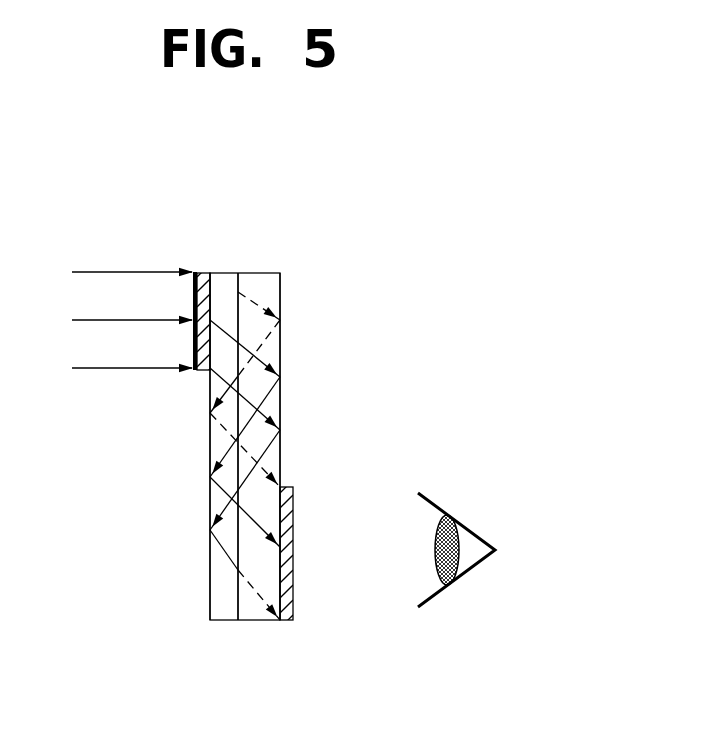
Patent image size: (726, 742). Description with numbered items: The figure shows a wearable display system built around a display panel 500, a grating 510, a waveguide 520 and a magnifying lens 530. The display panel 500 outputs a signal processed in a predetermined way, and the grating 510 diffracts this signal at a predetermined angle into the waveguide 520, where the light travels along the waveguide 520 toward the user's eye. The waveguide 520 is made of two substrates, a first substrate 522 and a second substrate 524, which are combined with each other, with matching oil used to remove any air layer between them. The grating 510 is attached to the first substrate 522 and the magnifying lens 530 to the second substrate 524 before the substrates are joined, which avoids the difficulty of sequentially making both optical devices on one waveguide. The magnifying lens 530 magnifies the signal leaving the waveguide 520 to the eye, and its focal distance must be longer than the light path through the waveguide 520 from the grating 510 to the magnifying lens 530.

The display panel 500 is at (193, 372).
The grating 510 is at (198, 274).
The waveguide 520 is at (281, 299).
The first substrate 522 is at (232, 288).
The second substrate 524 is at (253, 607).
The magnifying lens 530 is at (297, 510).